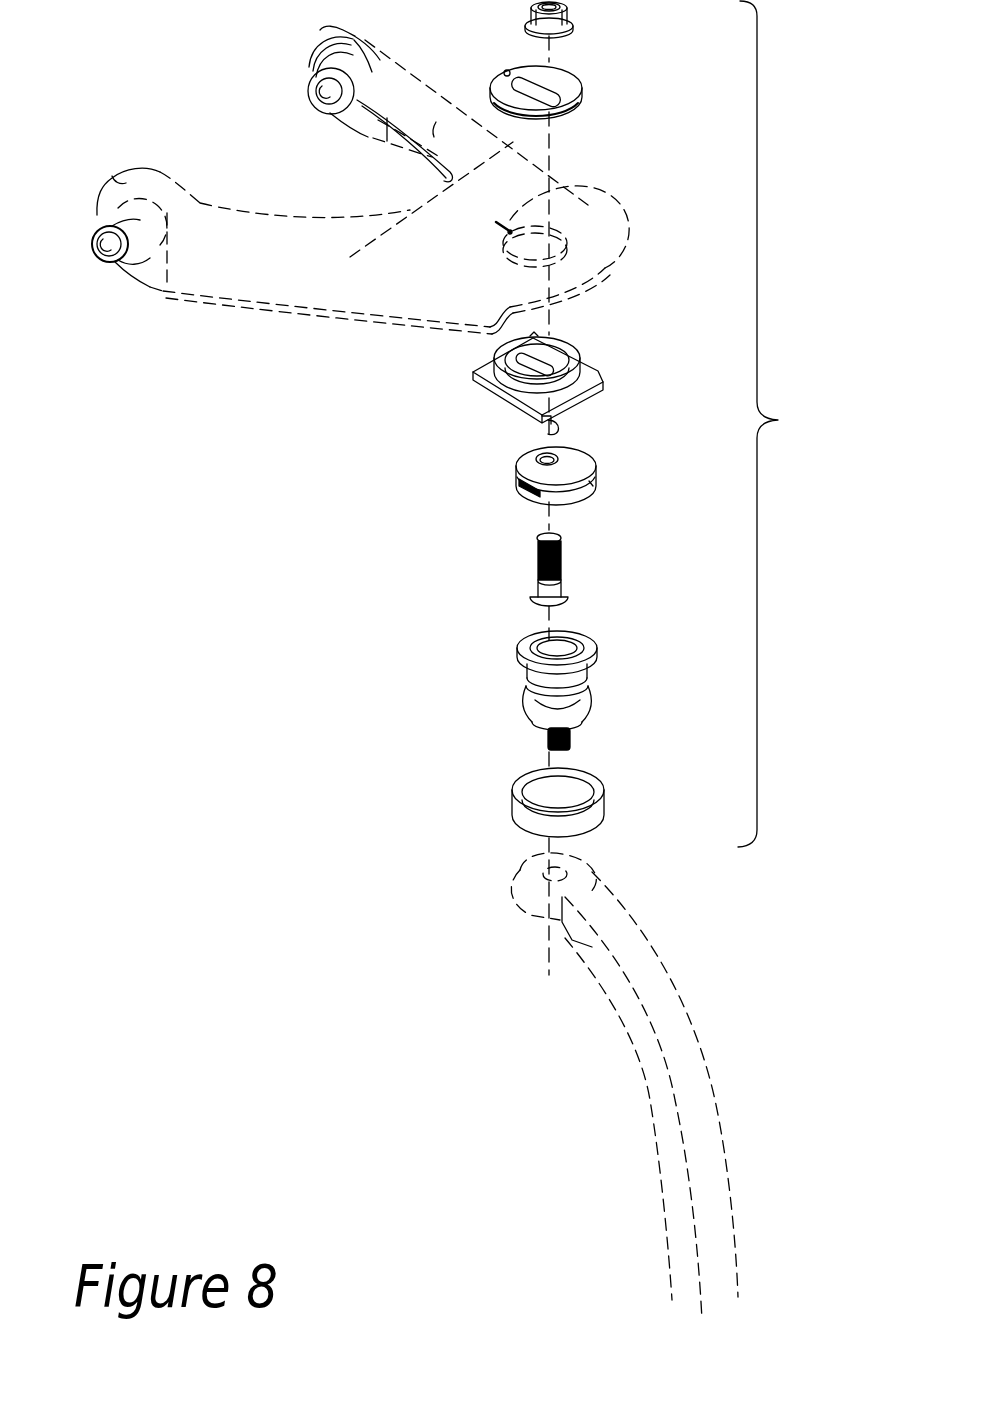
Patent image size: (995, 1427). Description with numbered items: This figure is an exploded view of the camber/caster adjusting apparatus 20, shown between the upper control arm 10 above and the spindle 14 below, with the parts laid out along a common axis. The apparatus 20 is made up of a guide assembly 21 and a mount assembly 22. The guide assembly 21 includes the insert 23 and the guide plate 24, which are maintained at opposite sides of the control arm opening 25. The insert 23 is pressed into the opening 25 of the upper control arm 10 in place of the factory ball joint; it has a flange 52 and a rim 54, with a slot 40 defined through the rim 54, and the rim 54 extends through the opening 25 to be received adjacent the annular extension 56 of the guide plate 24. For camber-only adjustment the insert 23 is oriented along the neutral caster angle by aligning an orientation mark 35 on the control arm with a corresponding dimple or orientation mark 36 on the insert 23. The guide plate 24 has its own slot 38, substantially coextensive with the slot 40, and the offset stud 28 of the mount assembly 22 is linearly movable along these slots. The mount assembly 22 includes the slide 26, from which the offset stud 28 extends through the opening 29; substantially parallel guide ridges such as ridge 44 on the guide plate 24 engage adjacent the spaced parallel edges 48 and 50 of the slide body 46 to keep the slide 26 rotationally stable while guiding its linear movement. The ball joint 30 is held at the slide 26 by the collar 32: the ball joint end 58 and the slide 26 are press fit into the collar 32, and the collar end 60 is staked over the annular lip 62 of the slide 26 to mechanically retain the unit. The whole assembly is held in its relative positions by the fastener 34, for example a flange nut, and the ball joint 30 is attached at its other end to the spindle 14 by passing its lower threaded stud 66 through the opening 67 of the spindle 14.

The upper control arm 10 is at (222, 290).
The spindle 14 is at (697, 1120).
The camber/caster adjusting apparatus 20 is at (780, 407).
The guide assembly 21 is at (398, 350).
The mount assembly 22 is at (400, 616).
The insert 23 is at (577, 97).
The guide plate 24 is at (505, 392).
The control arm opening 25 is at (615, 265).
The slide 26 is at (596, 468).
The offset stud 28 is at (561, 558).
The opening 29 is at (538, 455).
The ball joint 30 is at (595, 641).
The collar 32 is at (606, 801).
The fastener 34 is at (568, 12).
The orientation mark 35 is at (600, 188).
The orientation mark 36 is at (512, 72).
The slot 38 is at (526, 367).
The slot 40 is at (542, 80).
The guide ridge 44 is at (532, 445).
The slide body 46 is at (519, 468).
The edge 48 is at (586, 450).
The edge 50 is at (520, 488).
The flange 52 is at (574, 80).
The rim 54 is at (546, 122).
The annular extension 56 is at (581, 353).
The ball joint end 58 is at (518, 656).
The collar end 60 is at (514, 790).
The annular lip 62 is at (596, 481).
The lower threaded stud 66 is at (566, 738).
The opening 67 is at (530, 860).